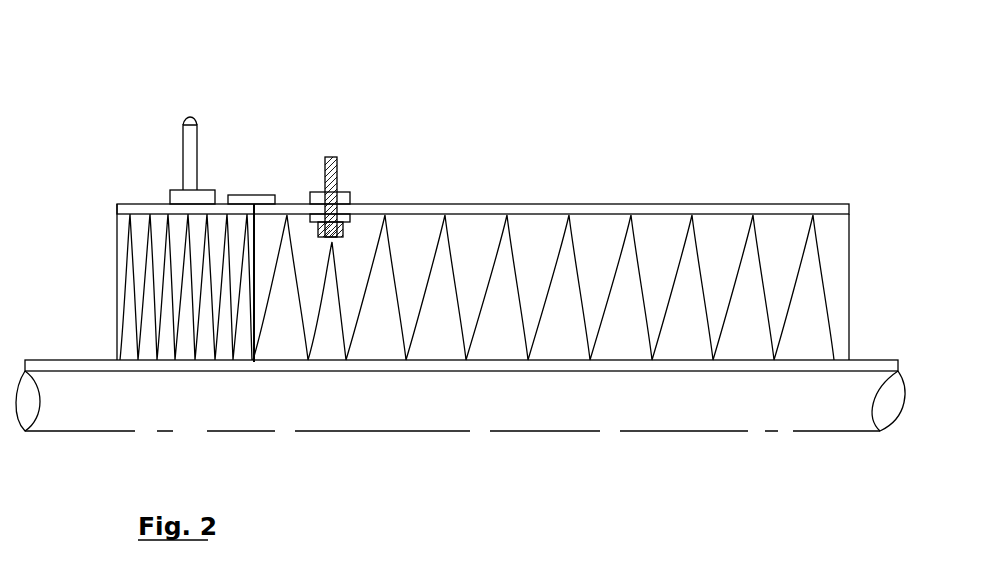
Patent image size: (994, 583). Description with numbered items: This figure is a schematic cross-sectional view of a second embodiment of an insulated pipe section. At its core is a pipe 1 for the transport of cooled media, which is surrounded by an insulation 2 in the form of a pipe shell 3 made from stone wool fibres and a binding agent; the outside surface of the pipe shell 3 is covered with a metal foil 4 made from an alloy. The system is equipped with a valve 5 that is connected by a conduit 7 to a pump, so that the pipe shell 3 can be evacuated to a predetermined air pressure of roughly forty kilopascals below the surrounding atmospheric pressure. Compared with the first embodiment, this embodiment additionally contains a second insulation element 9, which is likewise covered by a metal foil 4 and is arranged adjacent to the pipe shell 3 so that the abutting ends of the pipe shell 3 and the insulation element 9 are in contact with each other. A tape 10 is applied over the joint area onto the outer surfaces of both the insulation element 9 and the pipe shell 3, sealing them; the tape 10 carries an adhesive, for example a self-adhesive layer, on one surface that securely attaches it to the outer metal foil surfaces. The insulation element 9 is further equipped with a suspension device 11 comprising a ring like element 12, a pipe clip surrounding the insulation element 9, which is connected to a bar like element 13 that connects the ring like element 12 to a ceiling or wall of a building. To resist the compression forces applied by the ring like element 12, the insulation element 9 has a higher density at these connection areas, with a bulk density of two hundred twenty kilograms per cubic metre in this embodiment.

The pipe 1 is at (857, 362).
The insulation 2 is at (521, 250).
The pipe shell 3 is at (812, 295).
The metal foil 4 is at (595, 213).
The valve 5 is at (353, 197).
The conduit 7 is at (337, 170).
The second insulation element 9 is at (132, 280).
The tape 10 is at (248, 203).
The suspension device 11 is at (182, 153).
The ring like element 12 is at (180, 197).
The bar like element 13 is at (198, 137).